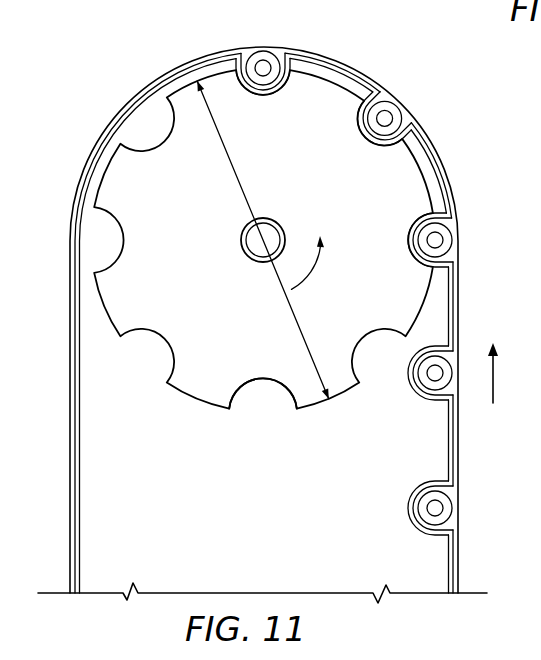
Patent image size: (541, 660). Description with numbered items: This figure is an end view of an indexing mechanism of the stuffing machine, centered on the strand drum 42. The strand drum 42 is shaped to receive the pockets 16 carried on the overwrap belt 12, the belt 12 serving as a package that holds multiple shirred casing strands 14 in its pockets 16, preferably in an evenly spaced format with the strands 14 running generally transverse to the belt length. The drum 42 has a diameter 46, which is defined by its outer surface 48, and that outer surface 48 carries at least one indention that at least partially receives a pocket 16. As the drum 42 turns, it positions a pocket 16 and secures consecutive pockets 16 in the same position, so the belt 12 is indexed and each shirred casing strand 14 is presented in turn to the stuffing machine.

The overwrap belt 12 is at (459, 307).
The shirred casing strand 14 is at (264, 66).
The pocket 16 is at (410, 495).
The strand drum 42 is at (238, 338).
The diameter 46 is at (233, 174).
The outer surface 48 is at (193, 408).